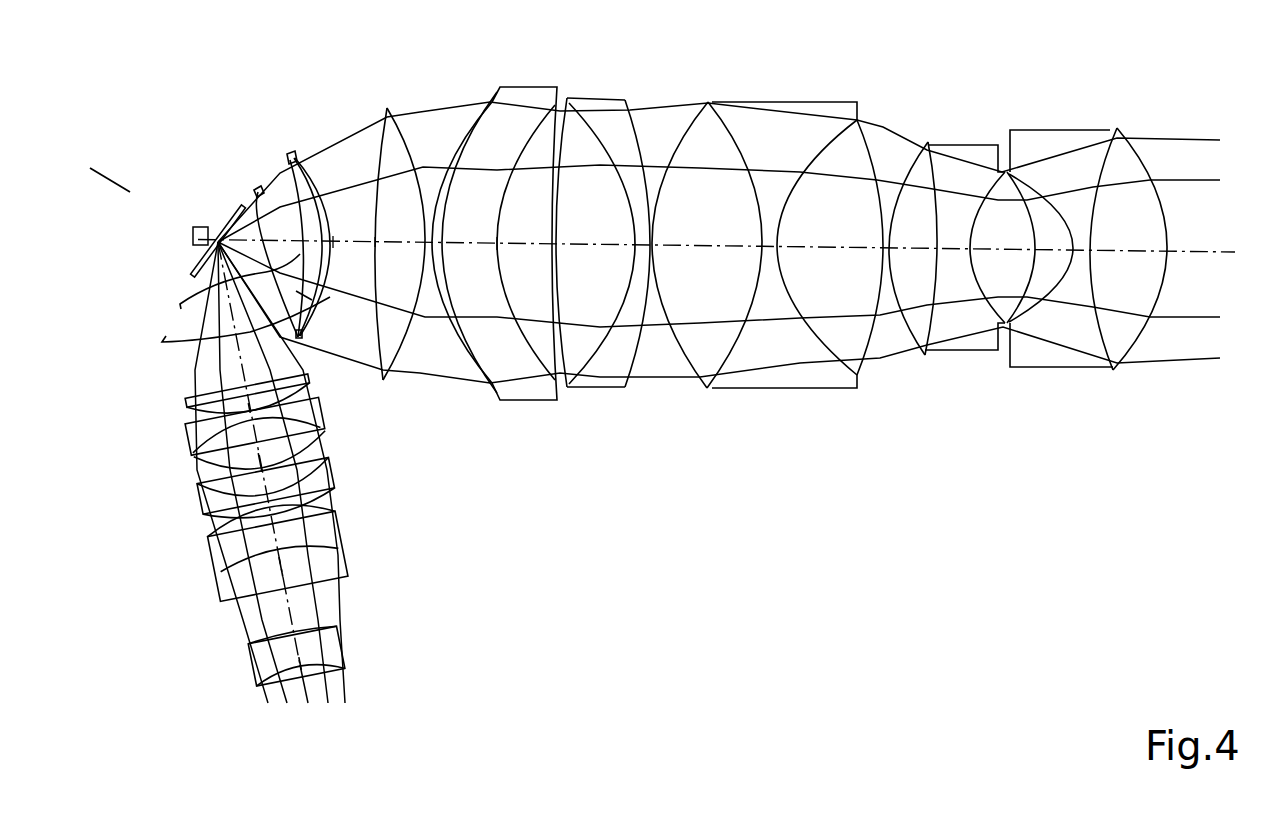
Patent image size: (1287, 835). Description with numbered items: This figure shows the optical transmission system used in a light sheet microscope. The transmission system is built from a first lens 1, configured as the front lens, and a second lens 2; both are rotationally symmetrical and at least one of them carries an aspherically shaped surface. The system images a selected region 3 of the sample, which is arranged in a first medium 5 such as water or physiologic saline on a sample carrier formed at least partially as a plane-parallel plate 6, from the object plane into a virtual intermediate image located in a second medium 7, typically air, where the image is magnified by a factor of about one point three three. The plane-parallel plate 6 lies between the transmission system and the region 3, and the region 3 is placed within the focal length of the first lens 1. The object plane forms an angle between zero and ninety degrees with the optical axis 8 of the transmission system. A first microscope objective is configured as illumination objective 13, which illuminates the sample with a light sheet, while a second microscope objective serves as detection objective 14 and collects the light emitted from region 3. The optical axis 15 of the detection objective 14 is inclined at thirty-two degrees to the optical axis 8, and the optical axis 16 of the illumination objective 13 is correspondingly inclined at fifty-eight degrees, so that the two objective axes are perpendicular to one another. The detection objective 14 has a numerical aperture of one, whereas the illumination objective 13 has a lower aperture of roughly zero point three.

The first lens 1 is at (262, 182).
The second lens 2 is at (288, 152).
The region 3 is at (205, 227).
The first medium 5 is at (193, 279).
The plane-parallel plate 6 is at (195, 270).
The second medium 7 is at (183, 323).
The optical axis 8 is at (112, 177).
The illumination objective 13 is at (164, 396).
The detection objective 14 is at (1176, 89).
The optical axis 15 is at (1203, 247).
The optical axis 16 is at (300, 617).